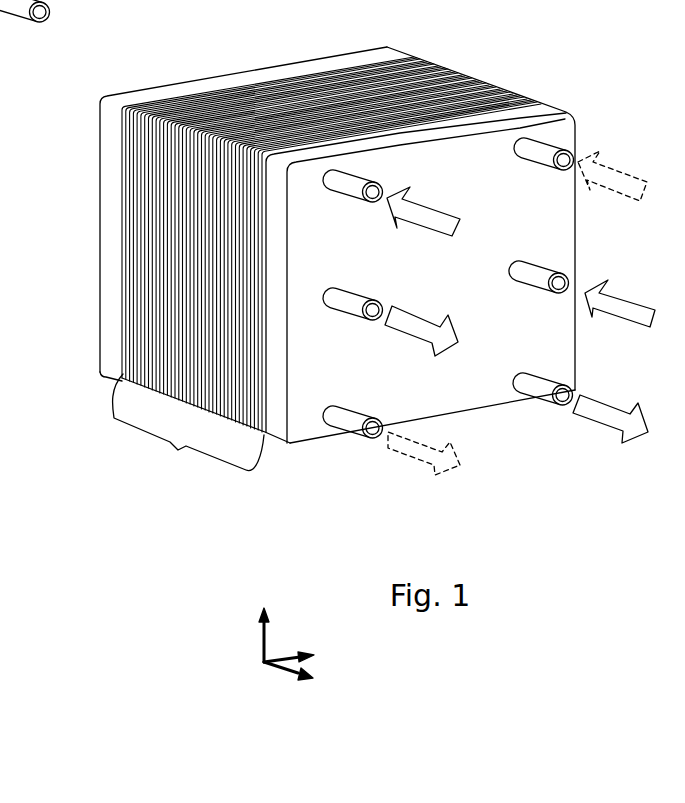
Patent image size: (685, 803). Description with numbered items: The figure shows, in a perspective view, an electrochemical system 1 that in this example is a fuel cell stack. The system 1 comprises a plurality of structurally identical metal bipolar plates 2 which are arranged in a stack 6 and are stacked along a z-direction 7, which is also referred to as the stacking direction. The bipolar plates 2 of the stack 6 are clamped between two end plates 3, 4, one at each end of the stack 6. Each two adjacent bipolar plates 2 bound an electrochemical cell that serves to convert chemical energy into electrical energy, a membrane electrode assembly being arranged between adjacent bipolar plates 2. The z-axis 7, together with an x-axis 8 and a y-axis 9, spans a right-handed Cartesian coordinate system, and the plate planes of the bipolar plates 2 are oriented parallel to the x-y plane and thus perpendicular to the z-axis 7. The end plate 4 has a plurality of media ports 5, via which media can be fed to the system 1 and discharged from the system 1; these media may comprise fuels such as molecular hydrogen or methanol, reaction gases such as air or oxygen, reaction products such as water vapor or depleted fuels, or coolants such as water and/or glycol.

The electrochemical system 1 is at (337, 265).
The bipolar plates 2 is at (457, 88).
The end plate 3 is at (183, 90).
The end plate 4 is at (279, 418).
The media ports 5 is at (286, 234).
The stack 6 is at (178, 449).
The z-direction 7 is at (287, 673).
The x-axis 8 is at (285, 660).
The y-axis 9 is at (263, 640).